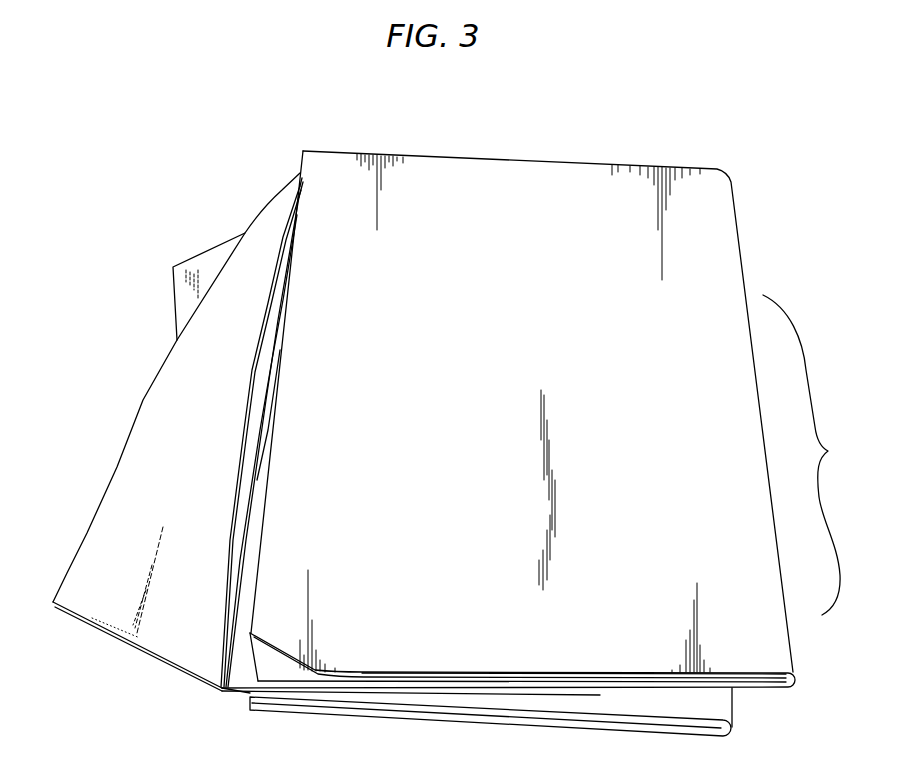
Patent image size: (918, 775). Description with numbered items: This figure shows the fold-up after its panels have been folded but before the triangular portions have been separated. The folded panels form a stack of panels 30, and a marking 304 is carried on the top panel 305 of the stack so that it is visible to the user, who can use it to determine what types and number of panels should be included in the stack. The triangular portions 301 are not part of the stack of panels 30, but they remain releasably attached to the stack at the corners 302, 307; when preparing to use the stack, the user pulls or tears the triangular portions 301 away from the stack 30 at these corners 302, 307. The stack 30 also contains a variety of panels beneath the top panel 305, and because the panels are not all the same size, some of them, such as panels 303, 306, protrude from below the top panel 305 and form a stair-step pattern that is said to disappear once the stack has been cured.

The stack of panels 30 is at (810, 455).
The triangular portions 301 is at (124, 632).
The corner 302 is at (223, 692).
The panel 303 is at (337, 713).
The marking 304 is at (357, 433).
The top panel 305 is at (723, 242).
The panel 306 is at (745, 688).
The corner 307 is at (294, 174).